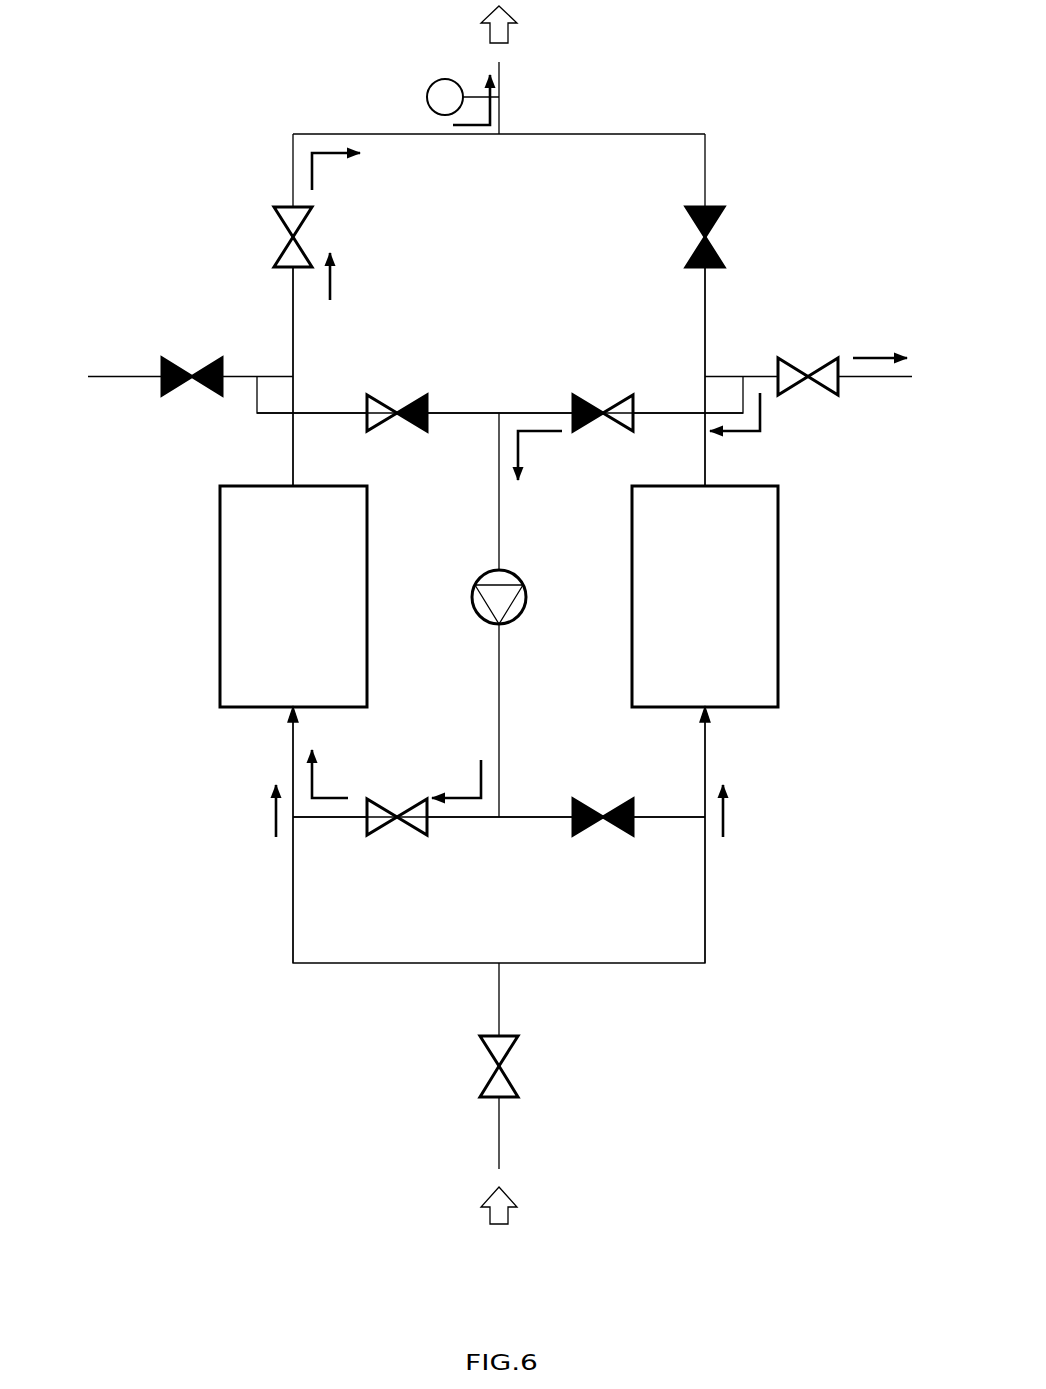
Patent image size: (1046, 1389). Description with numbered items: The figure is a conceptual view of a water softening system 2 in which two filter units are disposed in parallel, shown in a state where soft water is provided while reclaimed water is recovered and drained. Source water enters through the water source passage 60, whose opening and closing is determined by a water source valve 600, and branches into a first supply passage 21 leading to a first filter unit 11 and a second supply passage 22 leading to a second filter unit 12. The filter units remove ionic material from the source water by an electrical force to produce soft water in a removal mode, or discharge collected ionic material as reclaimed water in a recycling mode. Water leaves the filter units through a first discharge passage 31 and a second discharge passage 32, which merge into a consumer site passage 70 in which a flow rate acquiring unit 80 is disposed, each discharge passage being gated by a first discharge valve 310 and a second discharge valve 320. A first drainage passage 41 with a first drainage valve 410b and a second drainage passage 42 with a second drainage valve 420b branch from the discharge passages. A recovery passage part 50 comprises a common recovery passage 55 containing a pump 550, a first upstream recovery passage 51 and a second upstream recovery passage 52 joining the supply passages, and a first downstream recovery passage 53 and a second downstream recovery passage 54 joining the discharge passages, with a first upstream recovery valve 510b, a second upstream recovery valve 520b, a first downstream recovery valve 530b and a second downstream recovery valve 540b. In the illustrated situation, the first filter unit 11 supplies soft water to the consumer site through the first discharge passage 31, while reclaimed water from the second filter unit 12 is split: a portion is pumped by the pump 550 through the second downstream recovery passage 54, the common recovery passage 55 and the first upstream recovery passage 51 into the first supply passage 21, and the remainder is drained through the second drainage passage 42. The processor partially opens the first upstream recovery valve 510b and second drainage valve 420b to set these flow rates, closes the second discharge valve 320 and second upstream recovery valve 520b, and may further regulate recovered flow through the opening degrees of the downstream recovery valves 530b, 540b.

The water softening system 2 is at (322, 1133).
The first filter unit 11 is at (209, 596).
The second filter unit 12 is at (791, 597).
The first supply passage 21 is at (308, 918).
The second supply passage 22 is at (691, 918).
The first discharge passage 31 is at (309, 325).
The second discharge passage 32 is at (689, 323).
The first drainage passage 41 is at (122, 313).
The second drainage passage 42 is at (877, 313).
The recovery passage part 50 is at (840, 1147).
The first upstream recovery passage 51 is at (453, 826).
The second upstream recovery passage 52 is at (550, 826).
The first downstream recovery passage 53 is at (437, 431).
The second downstream recovery passage 54 is at (562, 432).
The common recovery passage 55 is at (511, 530).
The water source passage 60 is at (516, 1003).
The consumer site passage 70 is at (516, 86).
The flow rate acquiring unit 80 is at (417, 97).
The first discharge valve 310 is at (326, 235).
The second discharge valve 320 is at (673, 235).
The first drainage valve 410b is at (190, 351).
The second drainage valve 420b is at (808, 349).
The first upstream recovery valve 510b is at (402, 798).
The second upstream recovery valve 520b is at (600, 798).
The first downstream recovery valve 530b is at (402, 384).
The second downstream recovery valve 540b is at (597, 388).
The pump 550 is at (538, 593).
The water source valve 600 is at (523, 1067).